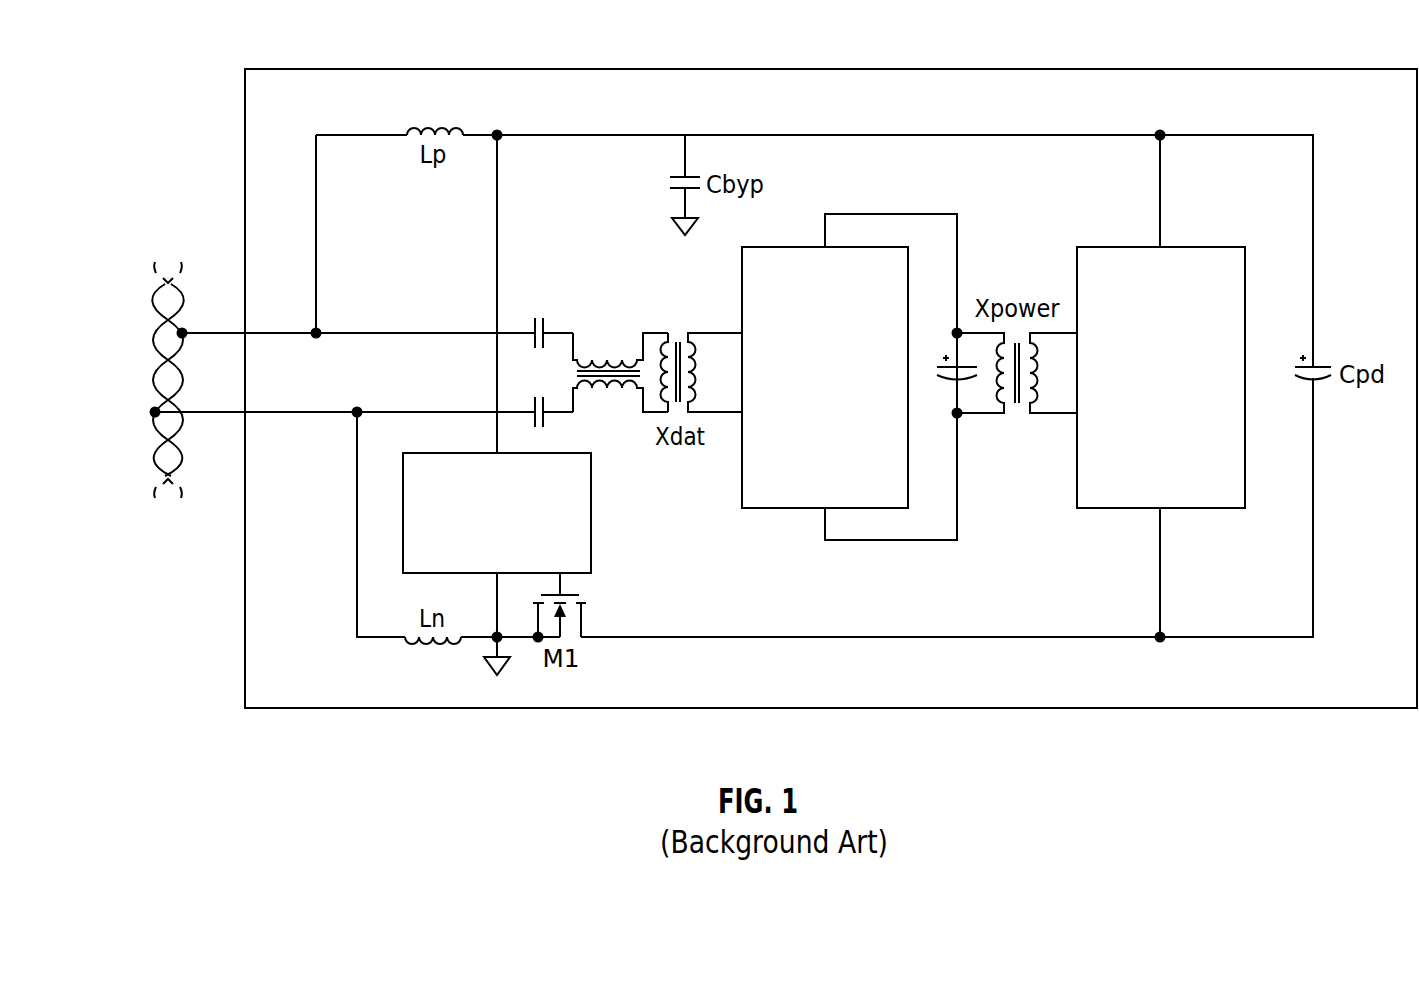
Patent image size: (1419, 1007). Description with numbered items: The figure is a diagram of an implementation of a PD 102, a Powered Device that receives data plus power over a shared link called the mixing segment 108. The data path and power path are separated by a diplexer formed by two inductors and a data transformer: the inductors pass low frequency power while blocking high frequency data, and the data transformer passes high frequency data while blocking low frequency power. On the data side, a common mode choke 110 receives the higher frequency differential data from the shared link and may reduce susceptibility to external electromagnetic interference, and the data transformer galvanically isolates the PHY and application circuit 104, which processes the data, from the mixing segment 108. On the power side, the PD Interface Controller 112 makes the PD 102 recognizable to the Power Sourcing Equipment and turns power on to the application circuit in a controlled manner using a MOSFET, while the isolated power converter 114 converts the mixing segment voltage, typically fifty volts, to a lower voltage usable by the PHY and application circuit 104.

The PD 102 is at (313, 68).
The PHY and application circuit 104 is at (806, 246).
The mixing segment 108 is at (134, 324).
The common mode choke 110 is at (601, 326).
The PD Interface Controller 112 is at (470, 452).
The isolated power converter 114 is at (1143, 246).